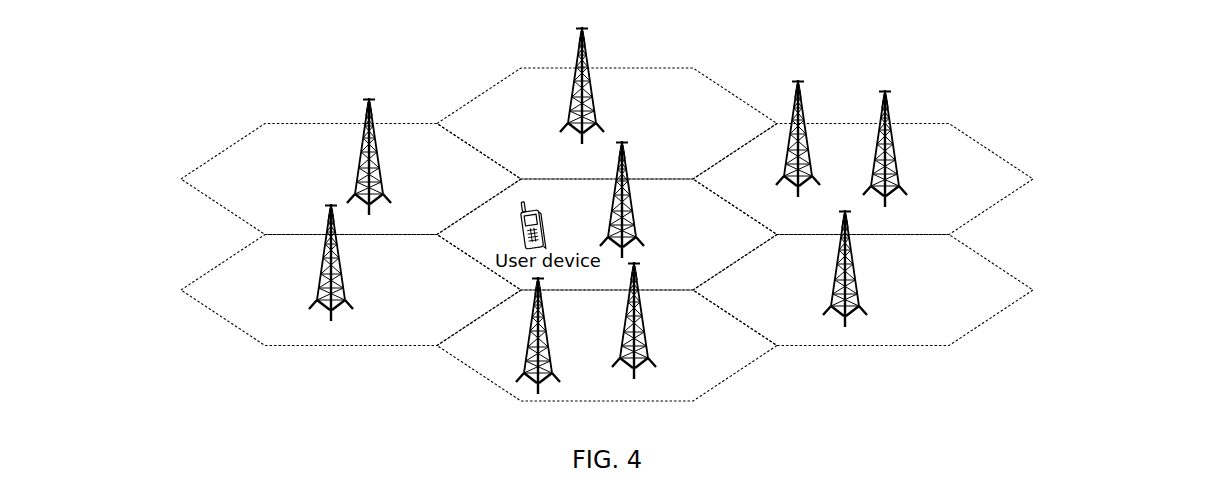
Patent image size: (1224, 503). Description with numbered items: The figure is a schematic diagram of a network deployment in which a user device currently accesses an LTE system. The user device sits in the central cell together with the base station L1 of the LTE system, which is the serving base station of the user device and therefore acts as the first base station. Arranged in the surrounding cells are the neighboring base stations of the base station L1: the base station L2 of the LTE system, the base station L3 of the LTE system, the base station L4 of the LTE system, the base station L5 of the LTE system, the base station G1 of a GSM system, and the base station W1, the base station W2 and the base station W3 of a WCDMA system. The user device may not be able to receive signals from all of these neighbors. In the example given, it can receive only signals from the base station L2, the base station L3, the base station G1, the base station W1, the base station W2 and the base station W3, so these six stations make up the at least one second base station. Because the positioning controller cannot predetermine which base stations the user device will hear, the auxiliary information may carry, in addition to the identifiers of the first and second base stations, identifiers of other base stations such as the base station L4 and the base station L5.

The base station L1 of the LTE system L1 is at (632, 199).
The base station L2 of the LTE system L2 is at (380, 156).
The base station L3 of the LTE system L3 is at (553, 335).
The base station L4 of the LTE system L4 is at (903, 148).
The base station L5 of the LTE system L5 is at (594, 85).
The base station W1 of the WCDMA system W1 is at (654, 320).
The base station W2 of the WCDMA system W2 is at (865, 268).
The base station W3 of the WCDMA system W3 is at (798, 151).
The base station G1 of the GSM system G1 is at (349, 262).